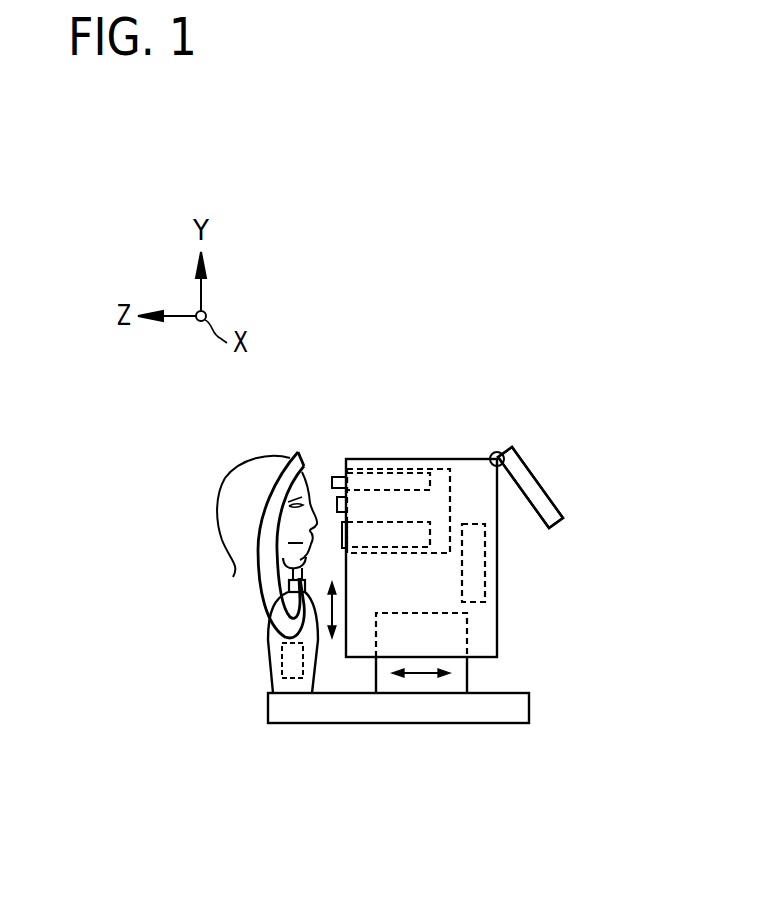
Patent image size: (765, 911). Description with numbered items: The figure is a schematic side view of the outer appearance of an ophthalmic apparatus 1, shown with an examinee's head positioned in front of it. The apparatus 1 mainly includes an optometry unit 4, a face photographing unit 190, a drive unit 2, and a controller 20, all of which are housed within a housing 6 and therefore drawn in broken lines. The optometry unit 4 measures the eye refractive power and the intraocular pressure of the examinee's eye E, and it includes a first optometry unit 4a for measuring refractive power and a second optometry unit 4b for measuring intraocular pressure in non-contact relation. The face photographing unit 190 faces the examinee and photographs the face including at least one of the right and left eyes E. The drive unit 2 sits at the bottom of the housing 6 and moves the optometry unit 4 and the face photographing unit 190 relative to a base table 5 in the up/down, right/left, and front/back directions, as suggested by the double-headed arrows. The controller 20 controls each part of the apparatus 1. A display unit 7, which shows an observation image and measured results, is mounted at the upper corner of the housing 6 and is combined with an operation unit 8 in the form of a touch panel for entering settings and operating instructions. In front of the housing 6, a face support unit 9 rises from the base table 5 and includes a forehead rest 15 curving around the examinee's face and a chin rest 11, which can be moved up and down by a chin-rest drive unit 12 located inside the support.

The ophthalmic apparatus 1 is at (520, 370).
The drive unit 2 is at (465, 630).
The optometry unit 4 is at (464, 485).
The first optometry unit 4a is at (377, 535).
The second optometry unit 4b is at (419, 482).
The base table 5 is at (403, 710).
The housing 6 is at (462, 458).
The display unit 7 is at (532, 488).
The operation unit 8 is at (530, 487).
The face support unit 9 is at (239, 659).
The chin rest 11 is at (288, 580).
The chin-rest drive unit 12 is at (292, 660).
The forehead rest 15 is at (299, 452).
The controller 20 is at (485, 573).
The face photographing unit 190 is at (347, 503).
The examinee's eye E is at (311, 492).